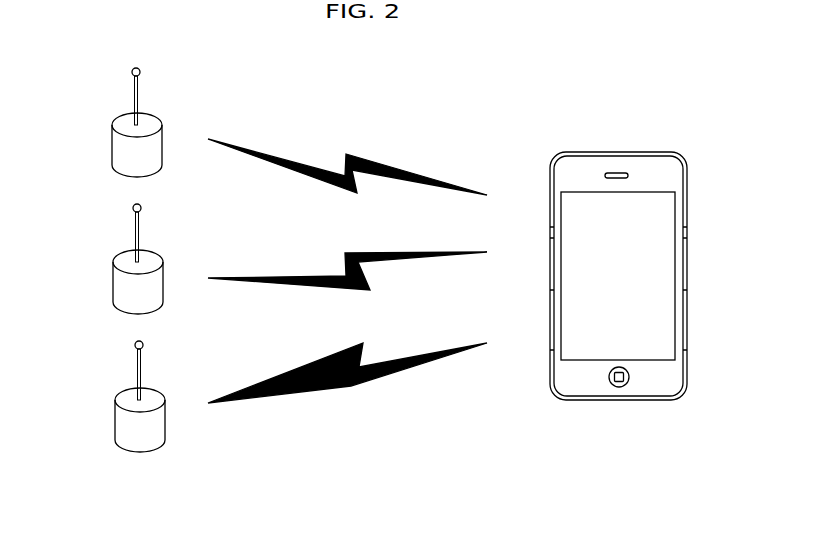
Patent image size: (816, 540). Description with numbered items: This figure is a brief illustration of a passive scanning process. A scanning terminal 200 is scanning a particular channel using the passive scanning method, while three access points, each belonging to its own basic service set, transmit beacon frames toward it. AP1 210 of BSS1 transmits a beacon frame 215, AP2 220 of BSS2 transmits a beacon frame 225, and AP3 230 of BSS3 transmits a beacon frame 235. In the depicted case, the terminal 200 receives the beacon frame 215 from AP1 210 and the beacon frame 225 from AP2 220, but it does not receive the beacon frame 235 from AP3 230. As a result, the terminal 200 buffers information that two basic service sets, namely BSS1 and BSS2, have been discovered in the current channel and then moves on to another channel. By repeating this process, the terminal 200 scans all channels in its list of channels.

The terminal 200 is at (618, 401).
The AP1 210 is at (113, 118).
The AP2 220 is at (115, 255).
The AP3 230 is at (117, 393).
The beacon frame 215 is at (418, 124).
The beacon frame 225 is at (418, 233).
The beacon frame 235 is at (422, 409).